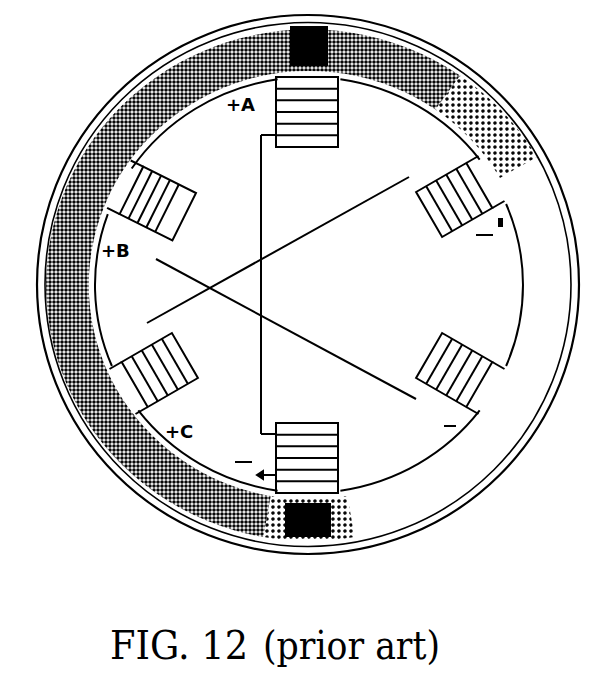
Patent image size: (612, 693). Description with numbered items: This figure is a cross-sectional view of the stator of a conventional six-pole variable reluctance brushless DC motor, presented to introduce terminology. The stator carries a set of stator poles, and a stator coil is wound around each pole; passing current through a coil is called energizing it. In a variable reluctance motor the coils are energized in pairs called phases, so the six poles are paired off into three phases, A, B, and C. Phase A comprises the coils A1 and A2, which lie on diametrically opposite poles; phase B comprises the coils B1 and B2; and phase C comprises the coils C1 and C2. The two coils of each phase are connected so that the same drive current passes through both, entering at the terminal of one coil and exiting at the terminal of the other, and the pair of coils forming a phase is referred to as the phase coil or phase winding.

The stator coil A1 is at (323, 112).
The stator coil A2 is at (323, 458).
The stator coil B1 is at (151, 191).
The stator coil B2 is at (460, 364).
The stator coil C1 is at (154, 366).
The stator coil C2 is at (460, 192).